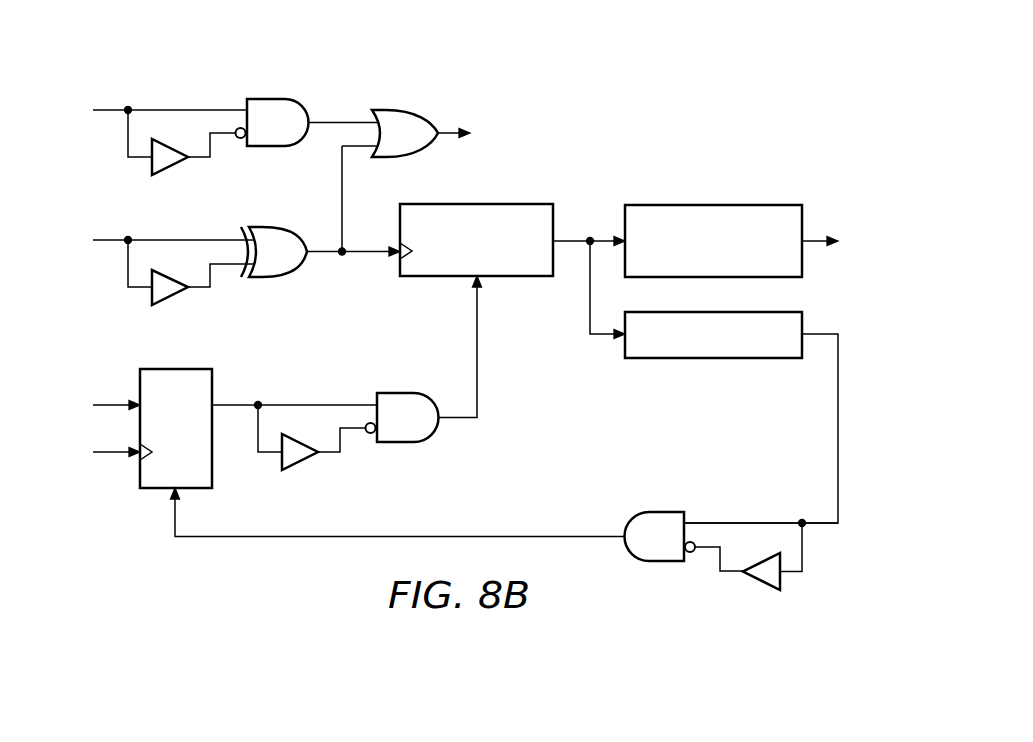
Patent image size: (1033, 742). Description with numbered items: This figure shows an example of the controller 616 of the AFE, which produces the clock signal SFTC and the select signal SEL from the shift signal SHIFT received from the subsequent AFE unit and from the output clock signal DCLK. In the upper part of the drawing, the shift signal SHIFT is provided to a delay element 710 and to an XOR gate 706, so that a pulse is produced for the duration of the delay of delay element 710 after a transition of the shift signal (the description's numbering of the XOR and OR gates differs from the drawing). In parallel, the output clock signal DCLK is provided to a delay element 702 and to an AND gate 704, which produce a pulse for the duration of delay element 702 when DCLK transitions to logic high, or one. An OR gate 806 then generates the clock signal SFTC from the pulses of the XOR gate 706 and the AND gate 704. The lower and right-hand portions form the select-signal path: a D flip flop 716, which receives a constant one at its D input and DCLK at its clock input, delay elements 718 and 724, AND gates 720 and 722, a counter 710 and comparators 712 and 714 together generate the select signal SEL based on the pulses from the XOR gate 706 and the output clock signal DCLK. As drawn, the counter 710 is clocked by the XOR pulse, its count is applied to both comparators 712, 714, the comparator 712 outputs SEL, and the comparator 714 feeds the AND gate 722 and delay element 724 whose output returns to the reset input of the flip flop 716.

The controller 616 is at (649, 123).
The delay element 702 is at (172, 165).
The AND gate 704 is at (274, 98).
The OR gate 706 is at (284, 227).
The delay element 710 is at (172, 296).
The comparator 712 is at (714, 204).
The comparator 714 is at (713, 360).
The D flip flop 716 is at (214, 386).
The delay element 718 is at (300, 463).
The AND gate 720 is at (405, 442).
The AND gate 722 is at (653, 511).
The delay element 724 is at (760, 582).
The OR gate 806 is at (413, 111).